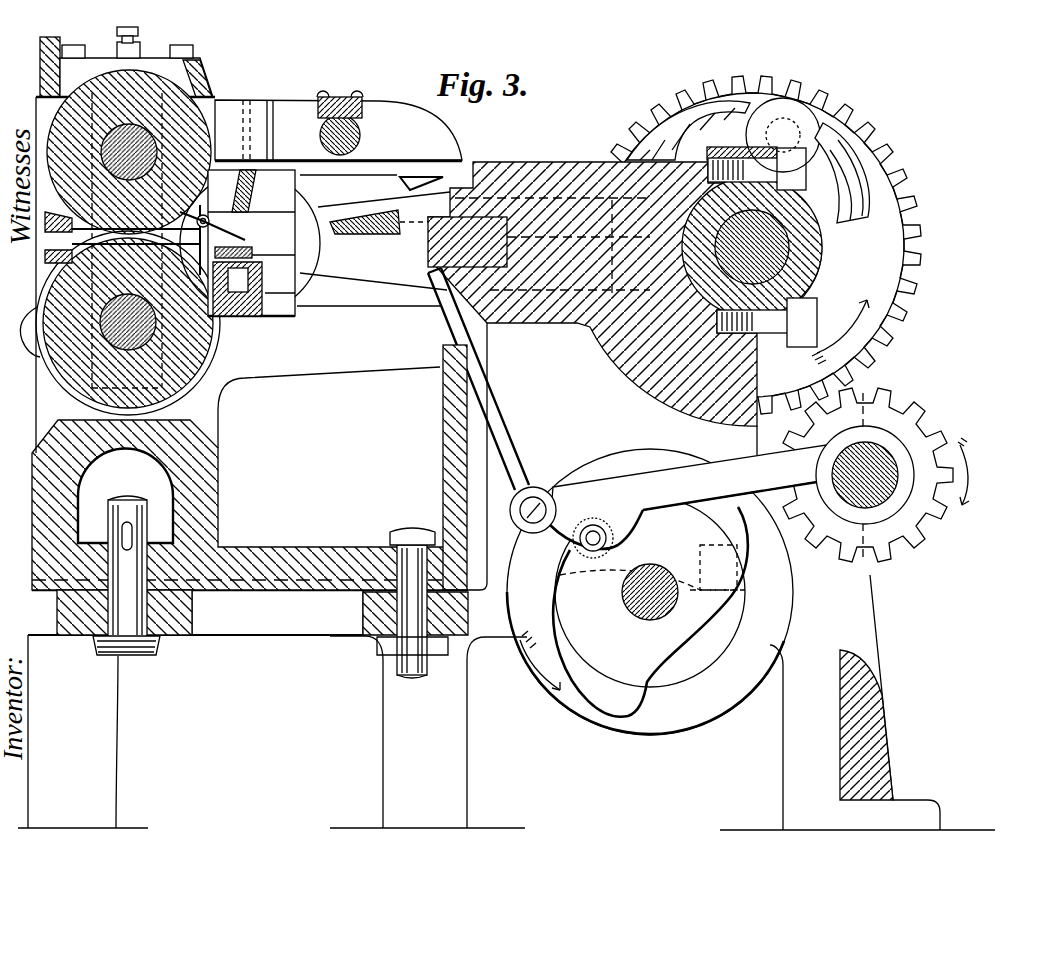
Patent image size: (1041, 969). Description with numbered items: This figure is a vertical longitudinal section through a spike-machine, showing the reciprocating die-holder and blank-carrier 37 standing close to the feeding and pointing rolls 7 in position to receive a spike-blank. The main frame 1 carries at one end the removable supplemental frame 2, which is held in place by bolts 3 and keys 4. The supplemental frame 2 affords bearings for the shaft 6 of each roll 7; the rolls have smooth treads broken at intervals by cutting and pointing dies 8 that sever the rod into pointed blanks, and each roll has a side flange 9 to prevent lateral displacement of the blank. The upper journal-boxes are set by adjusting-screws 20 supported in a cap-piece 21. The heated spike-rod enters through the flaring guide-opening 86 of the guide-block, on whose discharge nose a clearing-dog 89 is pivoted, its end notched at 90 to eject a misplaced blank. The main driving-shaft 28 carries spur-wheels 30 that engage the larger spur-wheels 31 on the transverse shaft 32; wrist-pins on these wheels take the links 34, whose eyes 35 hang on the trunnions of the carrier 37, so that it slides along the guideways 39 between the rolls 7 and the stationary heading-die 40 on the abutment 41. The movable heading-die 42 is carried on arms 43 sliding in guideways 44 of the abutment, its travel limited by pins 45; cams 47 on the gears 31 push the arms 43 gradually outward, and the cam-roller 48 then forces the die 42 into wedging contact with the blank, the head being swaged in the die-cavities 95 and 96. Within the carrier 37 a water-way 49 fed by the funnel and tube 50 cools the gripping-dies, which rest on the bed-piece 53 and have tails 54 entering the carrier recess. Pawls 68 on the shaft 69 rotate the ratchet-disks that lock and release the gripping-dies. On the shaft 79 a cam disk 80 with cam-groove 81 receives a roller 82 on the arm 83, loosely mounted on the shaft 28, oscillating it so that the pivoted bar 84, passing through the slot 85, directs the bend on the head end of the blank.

The main frame 1 is at (506, 702).
The supplemental frame 2 is at (259, 413).
The bolts 3 is at (128, 492).
The keys 4 is at (122, 533).
The shaft 6 is at (128, 242).
The feeding and pointing rolls 7 is at (55, 108).
The cutting and pointing dies 8 is at (208, 130).
The flange 9 is at (200, 370).
The adjusting-screws 20 is at (117, 36).
The cap-piece 21 is at (125, 245).
The main driving-shaft 28 is at (848, 520).
The spur-wheels 30 is at (873, 475).
The spur-wheels 31 is at (766, 245).
The transverse shaft 32 is at (789, 256).
The pitman-rods or links 34 is at (369, 257).
The eyes 35 is at (254, 243).
The reciprocating die-holder and blank-carrier 37 is at (272, 287).
The stationary guideways 39 is at (348, 238).
The stationary spike-heading die 40 is at (459, 244).
The abutment 41 is at (625, 296).
The movable heading-die 42 is at (355, 215).
The supporting-arms 43 is at (415, 205).
The guideways 44 is at (688, 130).
The pins or studs 45 is at (842, 173).
The cams 47 is at (850, 200).
The cam-roller 48 is at (783, 134).
The water way or chamber 49 is at (247, 287).
The funnel and tube 50 is at (338, 119).
The bed-piece 53 is at (248, 245).
The projecting portion or tail 54 is at (212, 210).
The pawls 68 is at (408, 179).
The shaft 69 is at (361, 138).
The shaft 79 is at (642, 594).
The cam disk 80 is at (658, 592).
The cam-groove 81 is at (650, 612).
The roller 82 is at (588, 552).
The arm 83 is at (688, 497).
The reciprocating bar 84 is at (492, 400).
The slot or opening 85 is at (475, 335).
The flaring guide-opening 86 is at (121, 240).
The clearing-dog 89 is at (251, 243).
The notch 90 is at (271, 215).
The die-cavity 95 is at (430, 242).
The die-cavity 96 is at (394, 268).